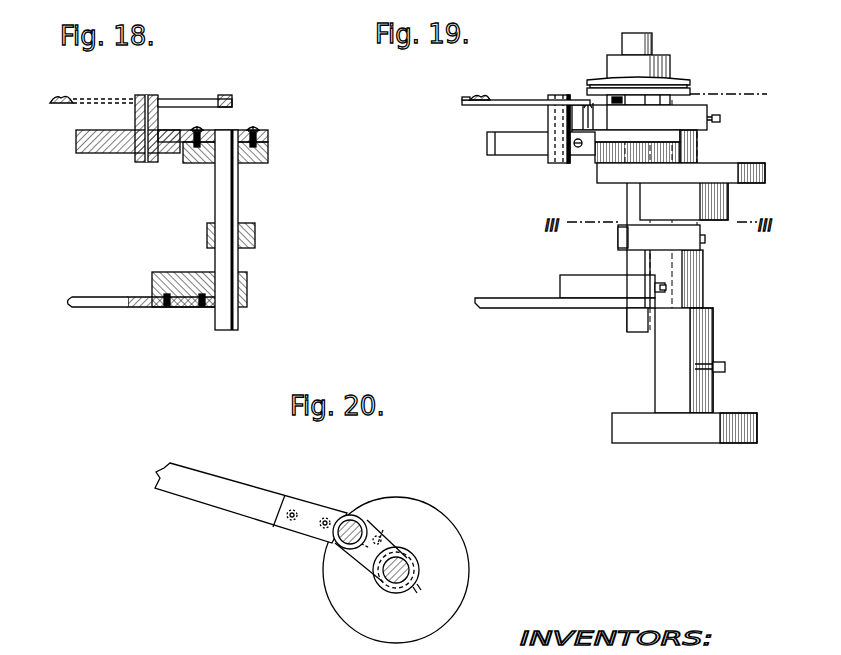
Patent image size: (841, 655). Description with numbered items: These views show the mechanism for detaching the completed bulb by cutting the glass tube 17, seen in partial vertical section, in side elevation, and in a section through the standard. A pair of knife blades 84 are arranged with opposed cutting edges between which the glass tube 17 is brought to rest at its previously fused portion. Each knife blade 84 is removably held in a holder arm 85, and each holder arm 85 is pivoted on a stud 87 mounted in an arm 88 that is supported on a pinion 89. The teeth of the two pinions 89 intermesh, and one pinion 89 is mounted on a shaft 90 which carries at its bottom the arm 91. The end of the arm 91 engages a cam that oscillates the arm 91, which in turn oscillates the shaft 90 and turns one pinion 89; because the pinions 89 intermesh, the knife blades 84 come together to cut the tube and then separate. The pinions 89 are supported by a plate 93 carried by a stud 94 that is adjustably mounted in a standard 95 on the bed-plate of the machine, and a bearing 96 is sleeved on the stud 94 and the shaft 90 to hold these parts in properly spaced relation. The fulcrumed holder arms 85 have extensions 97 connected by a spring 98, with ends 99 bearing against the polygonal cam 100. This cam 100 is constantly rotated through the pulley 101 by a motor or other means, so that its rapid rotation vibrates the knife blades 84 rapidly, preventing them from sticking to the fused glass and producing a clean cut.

In FIG. 19, the glass tube 17 is at (738, 97).
In FIG. 18, the knife blades 84 is at (53, 98).
In FIG. 19, the knife blades 84 is at (465, 98).
In FIG. 18, the holder arm 85 is at (52, 104).
In FIG. 19, the holder arm 85 is at (522, 100).
In FIG. 18, the stud 87 is at (135, 119).
In FIG. 19, the stud 87 is at (548, 121).
In FIG. 18, the arm 88 is at (97, 153).
In FIG. 19, the arm 88 is at (532, 155).
In FIG. 18, the pinion 89 is at (268, 150).
In FIG. 19, the pinion 89 is at (597, 158).
In FIG. 18, the shaft 90 is at (238, 203).
In FIG. 19, the shaft 90 is at (627, 205).
In FIG. 20, the shaft 90 is at (350, 518).
In FIG. 18, the arm 91 is at (97, 305).
In FIG. 19, the arm 91 is at (492, 298).
In FIG. 20, the arm 91 is at (242, 488).
In FIG. 19, the plate 93 is at (756, 158).
In FIG. 19, the stud 94 is at (698, 148).
In FIG. 20, the stud 94 is at (380, 581).
In FIG. 19, the standard 95 is at (713, 333).
In FIG. 20, the standard 95 is at (420, 573).
In FIG. 18, the bearing 96 is at (255, 240).
In FIG. 19, the bearing 96 is at (617, 240).
In FIG. 20, the bearing 96 is at (383, 537).
In FIG. 18, the extensions 97 is at (186, 99).
In FIG. 19, the spring 98 is at (587, 116).
In FIG. 18, the ends 99 is at (230, 96).
In FIG. 19, the polygonal cam 100 is at (670, 97).
In FIG. 19, the pulley 101 is at (683, 80).